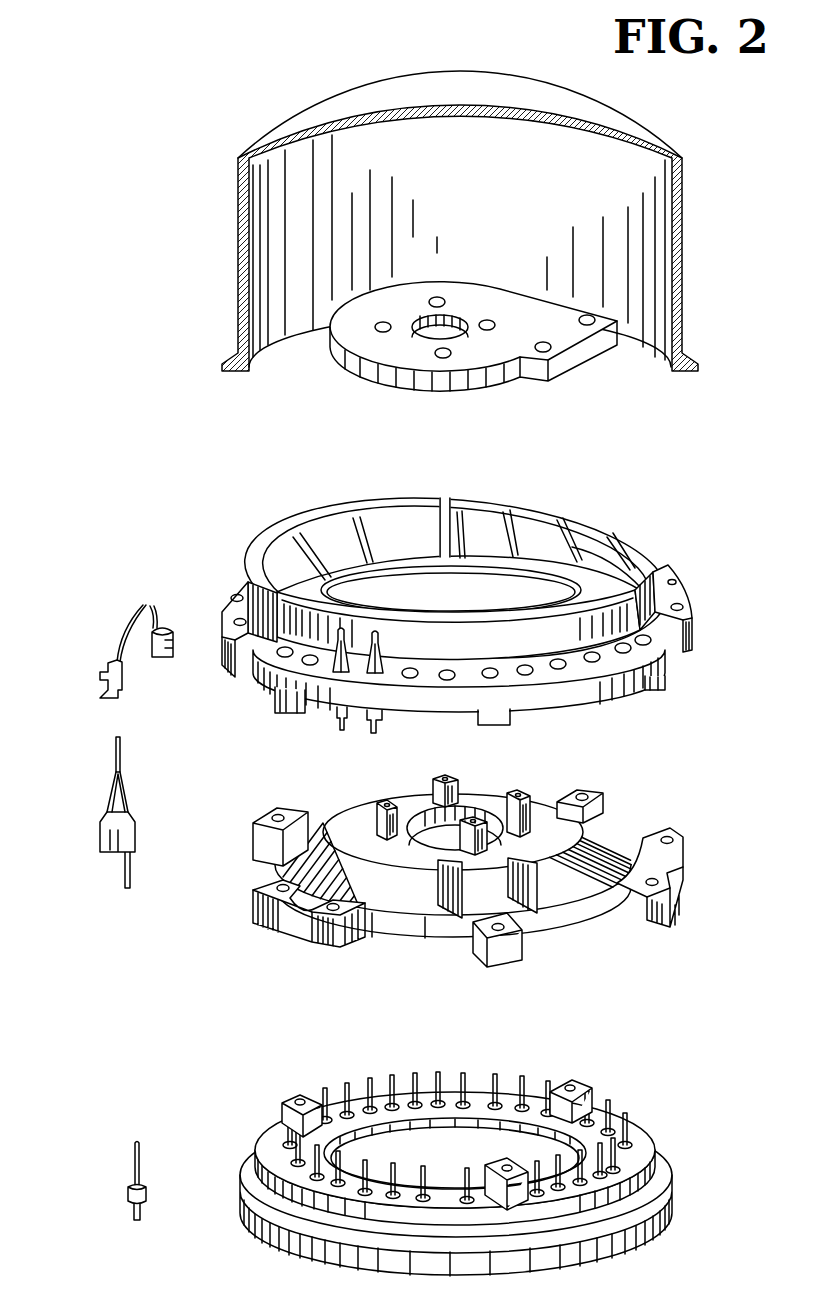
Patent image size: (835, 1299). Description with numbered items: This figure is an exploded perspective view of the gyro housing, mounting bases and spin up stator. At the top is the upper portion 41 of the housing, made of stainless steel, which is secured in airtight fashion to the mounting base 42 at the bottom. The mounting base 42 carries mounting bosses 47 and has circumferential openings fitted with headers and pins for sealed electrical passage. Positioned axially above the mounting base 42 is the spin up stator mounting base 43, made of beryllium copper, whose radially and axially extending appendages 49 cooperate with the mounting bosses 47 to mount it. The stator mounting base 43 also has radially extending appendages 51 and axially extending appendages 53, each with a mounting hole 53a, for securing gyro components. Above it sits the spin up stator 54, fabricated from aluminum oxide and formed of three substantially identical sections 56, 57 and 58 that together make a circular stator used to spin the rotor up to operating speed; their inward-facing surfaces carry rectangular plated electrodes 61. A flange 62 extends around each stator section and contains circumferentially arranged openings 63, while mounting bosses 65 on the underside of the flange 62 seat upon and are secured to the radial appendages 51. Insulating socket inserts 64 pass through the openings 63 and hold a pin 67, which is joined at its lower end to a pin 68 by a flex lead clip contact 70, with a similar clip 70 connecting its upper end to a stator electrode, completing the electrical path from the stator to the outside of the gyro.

The upper portion of housing 41 is at (680, 183).
The mounting base 42 is at (488, 1157).
The spin up stator mounting base 43 is at (477, 868).
The mounting bosses 47 is at (300, 1094).
The radially and axially extending appendages 49 is at (283, 810).
The radially extending appendages 51 is at (670, 908).
The axially extending appendages 53 is at (380, 800).
The mounting holes 53a is at (443, 777).
The spin up stator 54 is at (493, 606).
The stator section 56 is at (337, 510).
The stator section 57 is at (603, 512).
The stator section 58 is at (477, 597).
The electrodes 61 is at (530, 527).
The flange 62 is at (680, 573).
The openings 63 is at (683, 607).
The insulating socket inserts 64 is at (125, 793).
The mounting bosses 65 is at (290, 708).
The pin 67 is at (383, 730).
The pin 68 is at (142, 1155).
The flex lead clip contact 70 is at (145, 607).